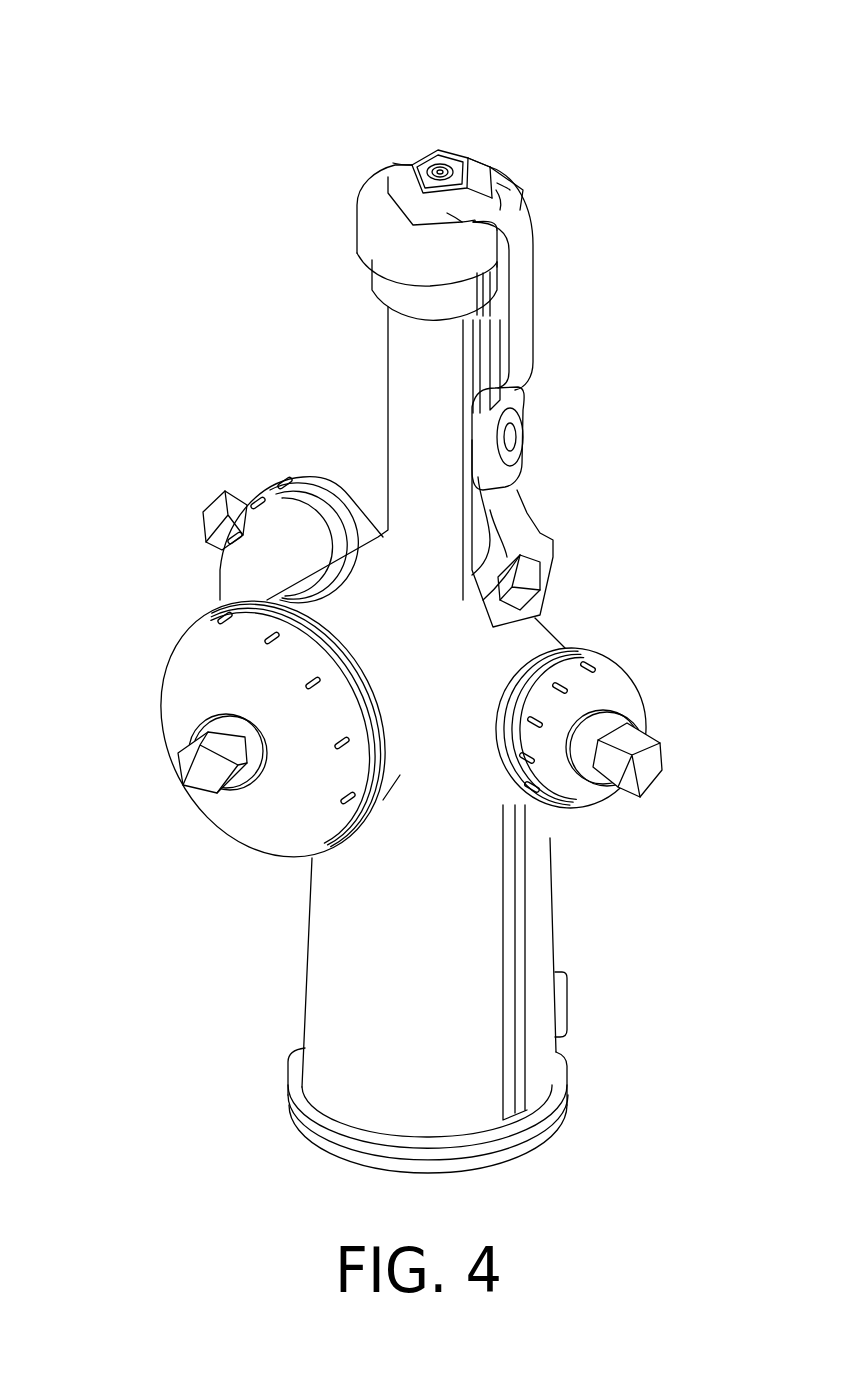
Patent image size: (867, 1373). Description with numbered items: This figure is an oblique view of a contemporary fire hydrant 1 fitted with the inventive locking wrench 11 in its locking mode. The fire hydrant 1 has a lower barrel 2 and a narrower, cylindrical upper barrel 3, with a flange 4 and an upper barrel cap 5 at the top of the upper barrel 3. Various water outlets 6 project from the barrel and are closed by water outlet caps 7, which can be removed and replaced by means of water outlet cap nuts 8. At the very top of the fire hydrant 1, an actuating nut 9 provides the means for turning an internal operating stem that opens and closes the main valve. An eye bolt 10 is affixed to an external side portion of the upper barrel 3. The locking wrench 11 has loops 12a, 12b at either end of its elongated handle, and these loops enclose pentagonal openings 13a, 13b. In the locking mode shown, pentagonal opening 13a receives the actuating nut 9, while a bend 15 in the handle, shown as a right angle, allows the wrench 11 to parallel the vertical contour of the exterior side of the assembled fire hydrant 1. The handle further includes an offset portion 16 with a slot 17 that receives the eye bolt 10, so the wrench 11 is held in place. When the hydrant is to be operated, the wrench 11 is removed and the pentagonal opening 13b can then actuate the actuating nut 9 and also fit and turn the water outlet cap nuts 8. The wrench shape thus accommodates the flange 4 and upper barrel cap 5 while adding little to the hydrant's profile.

The fire hydrant 1 is at (258, 80).
The lower barrel 2 is at (555, 955).
The upper barrel 3 is at (386, 395).
The flange 4 is at (370, 283).
The upper barrel cap 5 is at (362, 188).
The water outlets 6 is at (250, 595).
The water outlet caps 7 is at (287, 480).
The water outlet cap nuts 8 is at (182, 757).
The actuating nut 9 is at (424, 153).
The eye bolt 10 is at (522, 437).
The locking wrench 11 is at (537, 323).
The loop 12a is at (393, 163).
The loop 12b is at (543, 532).
The pentagonal opening 13a is at (480, 172).
The pentagonal opening 13b is at (528, 575).
The bend 15 is at (525, 223).
The offset portion 16 is at (523, 403).
The slot 17 is at (520, 466).